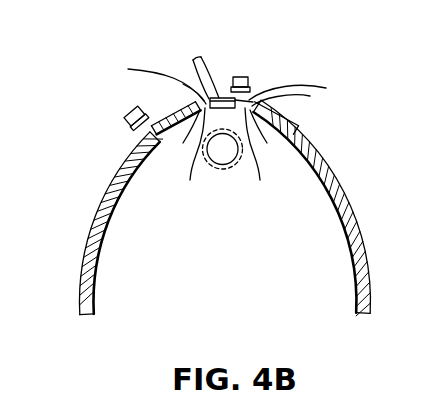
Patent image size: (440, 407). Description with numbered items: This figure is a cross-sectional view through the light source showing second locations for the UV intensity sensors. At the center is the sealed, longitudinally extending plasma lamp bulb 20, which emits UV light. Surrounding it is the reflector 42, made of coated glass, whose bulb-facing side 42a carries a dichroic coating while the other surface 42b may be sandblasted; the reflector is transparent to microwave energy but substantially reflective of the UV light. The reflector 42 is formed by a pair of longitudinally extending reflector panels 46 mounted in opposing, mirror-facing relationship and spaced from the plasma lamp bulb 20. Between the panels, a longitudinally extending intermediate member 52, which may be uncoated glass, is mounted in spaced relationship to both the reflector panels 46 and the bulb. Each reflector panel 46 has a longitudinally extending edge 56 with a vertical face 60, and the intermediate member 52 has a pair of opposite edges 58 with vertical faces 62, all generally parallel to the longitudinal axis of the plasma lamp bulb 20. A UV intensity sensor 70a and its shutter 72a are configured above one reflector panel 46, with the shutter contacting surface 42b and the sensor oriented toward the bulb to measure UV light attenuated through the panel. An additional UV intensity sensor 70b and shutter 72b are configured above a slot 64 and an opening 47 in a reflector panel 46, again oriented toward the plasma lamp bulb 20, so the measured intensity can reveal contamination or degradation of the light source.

The plasma lamp bulb 20 is at (213, 168).
The reflector 42 is at (355, 171).
The side of reflector 42a is at (97, 277).
The surface of reflector panel 42b is at (80, 277).
The reflector panel 46 is at (100, 221).
The opening 47 is at (116, 173).
The intermediate member 52 is at (222, 134).
The longitudinally extending edge 56 is at (203, 103).
The opposite edge of intermediate member 58 is at (193, 60).
The vertical face 60 is at (220, 135).
The vertical face 62 is at (229, 82).
The slot 64 is at (209, 149).
The UV intensity sensor 70a is at (126, 117).
The additional UV intensity sensor 70b is at (240, 76).
The shutter 72a is at (140, 138).
The shutter 72b is at (216, 97).